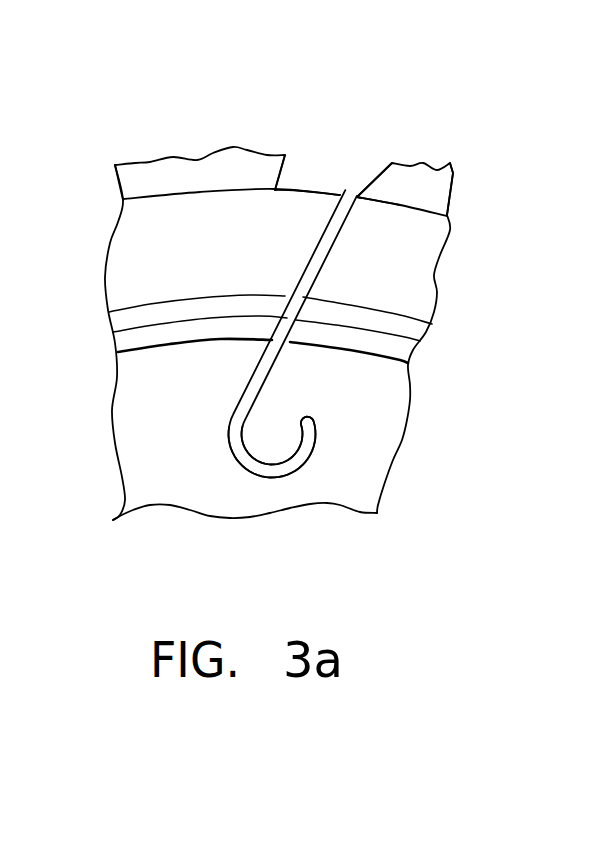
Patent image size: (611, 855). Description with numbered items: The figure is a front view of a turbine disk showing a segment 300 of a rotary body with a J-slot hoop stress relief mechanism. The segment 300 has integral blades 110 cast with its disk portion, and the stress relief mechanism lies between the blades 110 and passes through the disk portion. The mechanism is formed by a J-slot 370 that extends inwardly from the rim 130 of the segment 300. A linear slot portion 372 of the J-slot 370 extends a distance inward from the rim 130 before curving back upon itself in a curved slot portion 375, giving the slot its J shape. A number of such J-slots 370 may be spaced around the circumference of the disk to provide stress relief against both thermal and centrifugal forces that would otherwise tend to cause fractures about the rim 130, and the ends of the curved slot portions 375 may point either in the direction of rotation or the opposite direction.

The segment 300 is at (462, 112).
The integral blades 110 is at (162, 170).
The rim 130 is at (297, 188).
The J-slot 370 is at (285, 254).
The linear slot portion 372 is at (314, 254).
The curved slot portion 375 is at (252, 471).